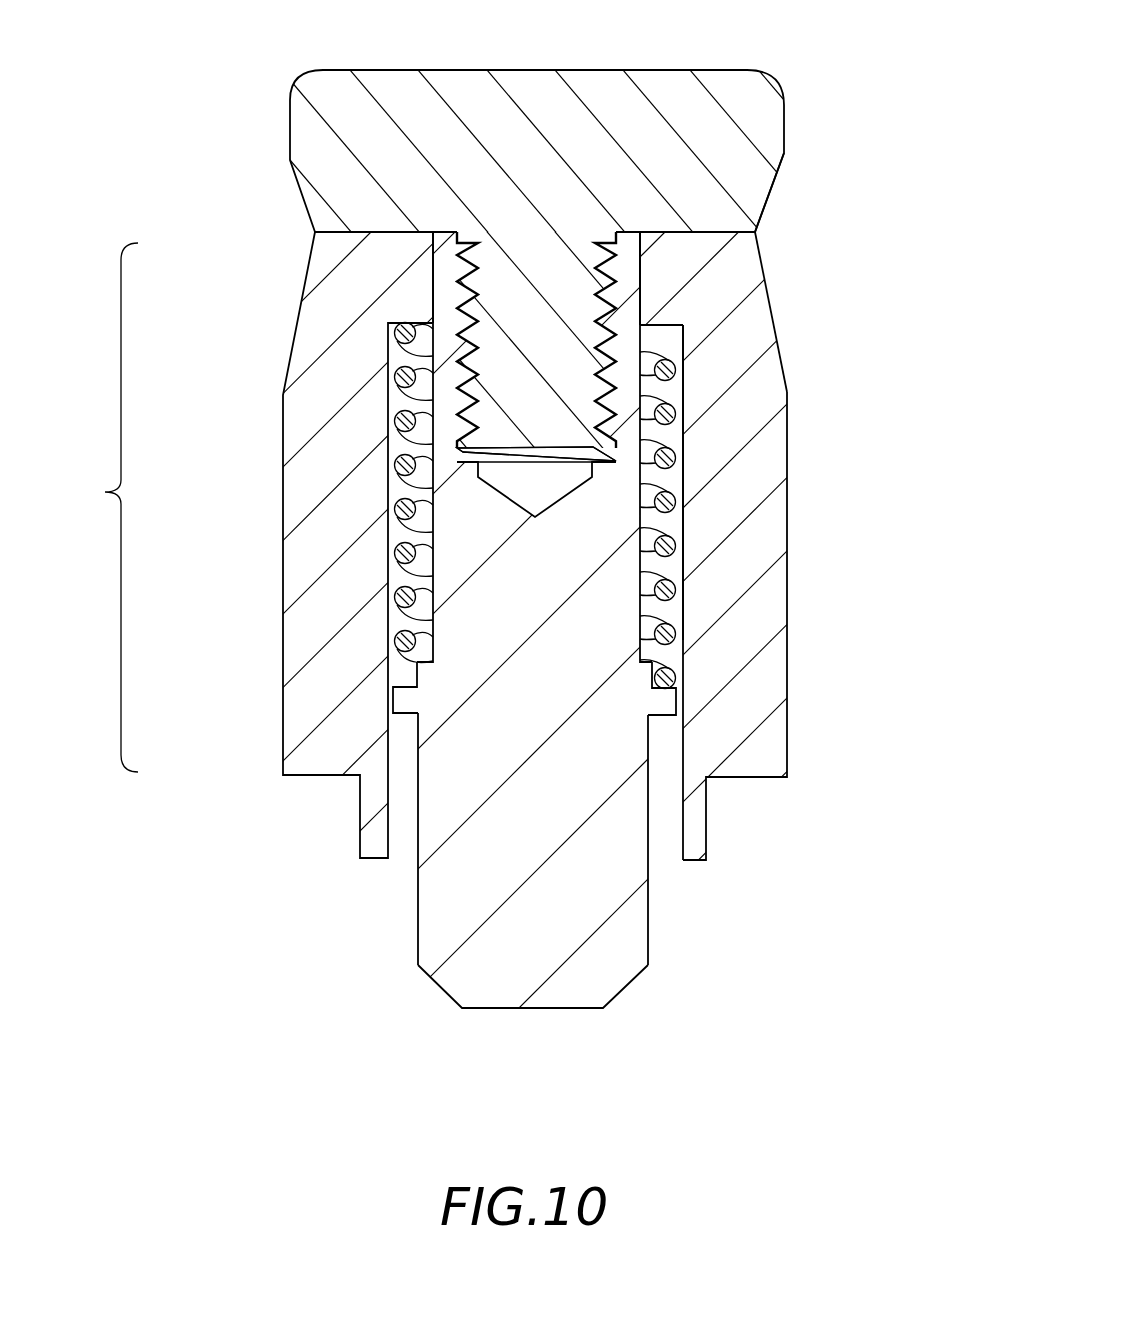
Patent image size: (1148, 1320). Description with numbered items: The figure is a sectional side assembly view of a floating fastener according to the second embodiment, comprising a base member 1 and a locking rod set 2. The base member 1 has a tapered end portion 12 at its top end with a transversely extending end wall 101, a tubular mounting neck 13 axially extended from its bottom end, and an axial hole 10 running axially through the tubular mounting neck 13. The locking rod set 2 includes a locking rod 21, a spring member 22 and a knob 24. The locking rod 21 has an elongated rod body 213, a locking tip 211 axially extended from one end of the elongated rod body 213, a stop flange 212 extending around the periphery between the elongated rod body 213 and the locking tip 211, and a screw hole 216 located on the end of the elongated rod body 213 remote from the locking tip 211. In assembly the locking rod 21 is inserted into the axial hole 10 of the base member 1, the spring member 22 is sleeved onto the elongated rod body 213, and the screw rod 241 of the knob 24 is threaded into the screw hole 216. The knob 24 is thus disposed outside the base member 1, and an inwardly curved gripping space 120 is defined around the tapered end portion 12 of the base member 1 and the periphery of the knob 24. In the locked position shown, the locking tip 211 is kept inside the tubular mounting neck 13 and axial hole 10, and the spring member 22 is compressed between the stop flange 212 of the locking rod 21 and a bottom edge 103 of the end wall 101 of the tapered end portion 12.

The base member 1 is at (775, 598).
The locking rod set 2 is at (112, 507).
The axial hole 10 is at (678, 431).
The tapered end portion 12 is at (782, 362).
The tubular mounting neck 13 is at (708, 818).
The locking rod 21 is at (424, 540).
The spring member 22 is at (400, 602).
The knob 24 is at (740, 88).
The end wall 101 is at (663, 272).
The bottom edge 103 is at (670, 320).
The gripping space 120 is at (790, 218).
The locking tip 211 is at (440, 925).
The stop flange 212 is at (402, 700).
The elongated rod body 213 is at (445, 432).
The screw hole 216 is at (612, 461).
The screw rod 241 is at (527, 320).